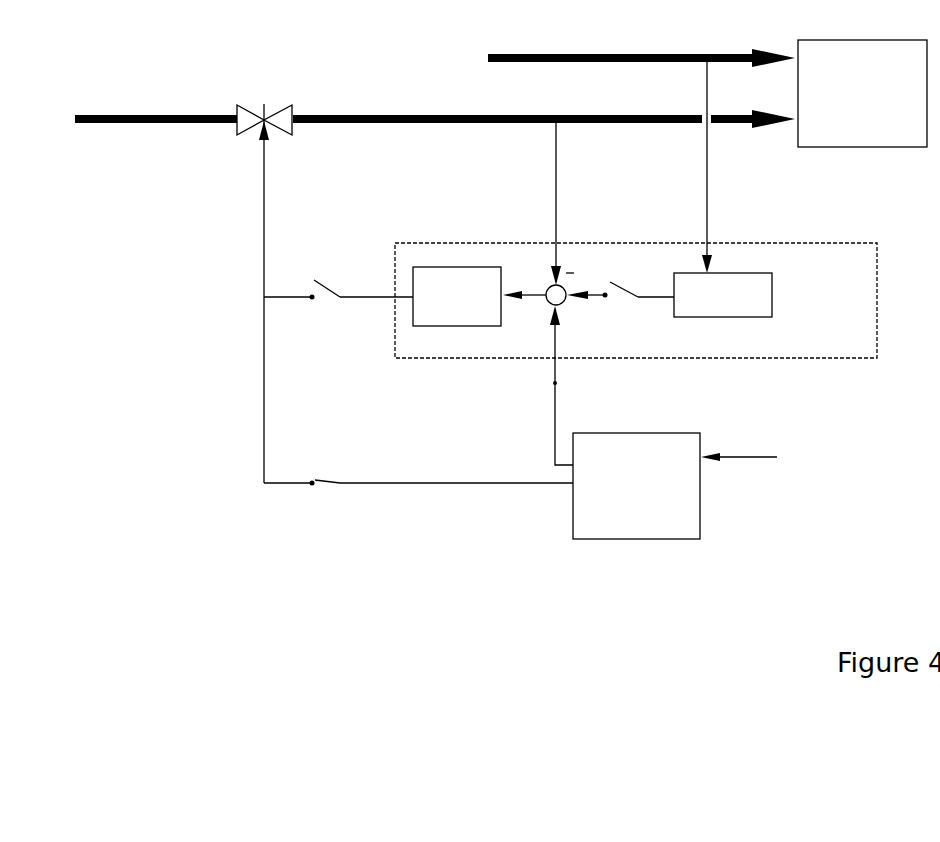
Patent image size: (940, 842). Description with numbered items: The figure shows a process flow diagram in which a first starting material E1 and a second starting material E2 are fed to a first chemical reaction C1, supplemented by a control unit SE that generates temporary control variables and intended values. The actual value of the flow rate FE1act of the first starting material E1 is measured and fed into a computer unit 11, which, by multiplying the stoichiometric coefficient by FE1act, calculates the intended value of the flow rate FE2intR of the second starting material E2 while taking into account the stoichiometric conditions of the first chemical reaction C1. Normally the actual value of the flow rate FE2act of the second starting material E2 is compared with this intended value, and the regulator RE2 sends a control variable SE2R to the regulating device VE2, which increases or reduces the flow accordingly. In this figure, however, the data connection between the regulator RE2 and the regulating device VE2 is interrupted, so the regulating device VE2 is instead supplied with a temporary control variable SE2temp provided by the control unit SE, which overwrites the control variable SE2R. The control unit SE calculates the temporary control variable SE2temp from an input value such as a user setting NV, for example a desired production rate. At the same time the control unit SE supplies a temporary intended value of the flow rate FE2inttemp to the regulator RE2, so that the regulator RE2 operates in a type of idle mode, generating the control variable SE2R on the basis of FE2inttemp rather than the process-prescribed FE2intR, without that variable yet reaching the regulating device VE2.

The computer unit 11 is at (775, 299).
The first starting material E1 is at (688, 53).
The second starting material E2 is at (192, 114).
The first chemical reaction C1 is at (862, 93).
The regulating device VE2 is at (283, 127).
The regulator RE2 is at (479, 296).
The control unit SE is at (636, 486).
The user setting NV is at (745, 456).
The control variable SE2R is at (340, 295).
The temporary control variable SE2temp is at (364, 481).
The actual value of the flow rate of the first starting material FE1act is at (709, 188).
The actual value of the flow rate of the second starting material FE2act is at (558, 188).
The intended value of the flow rate FE2intR is at (638, 299).
The temporary intended value of the flow rate FE2inttemp is at (558, 427).